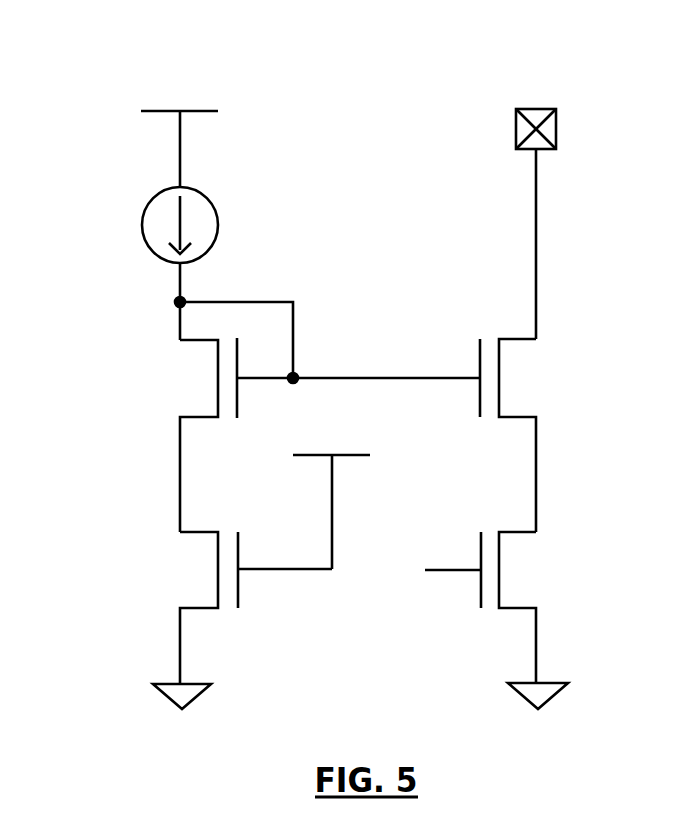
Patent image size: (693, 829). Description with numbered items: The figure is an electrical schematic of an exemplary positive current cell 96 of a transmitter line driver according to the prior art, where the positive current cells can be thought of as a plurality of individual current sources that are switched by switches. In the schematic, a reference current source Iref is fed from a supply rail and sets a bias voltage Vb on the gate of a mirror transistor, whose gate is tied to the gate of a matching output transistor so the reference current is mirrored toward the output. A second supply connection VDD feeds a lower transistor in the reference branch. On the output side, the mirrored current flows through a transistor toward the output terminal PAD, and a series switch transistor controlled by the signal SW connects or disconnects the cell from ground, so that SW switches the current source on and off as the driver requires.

The positive current cell 96 is at (395, 394).
The reference current source Iref is at (196, 225).
The bias voltage node Vb is at (358, 362).
The supply voltage VDD is at (331, 494).
The output pad PAD is at (536, 114).
The switch control signal SW is at (433, 571).